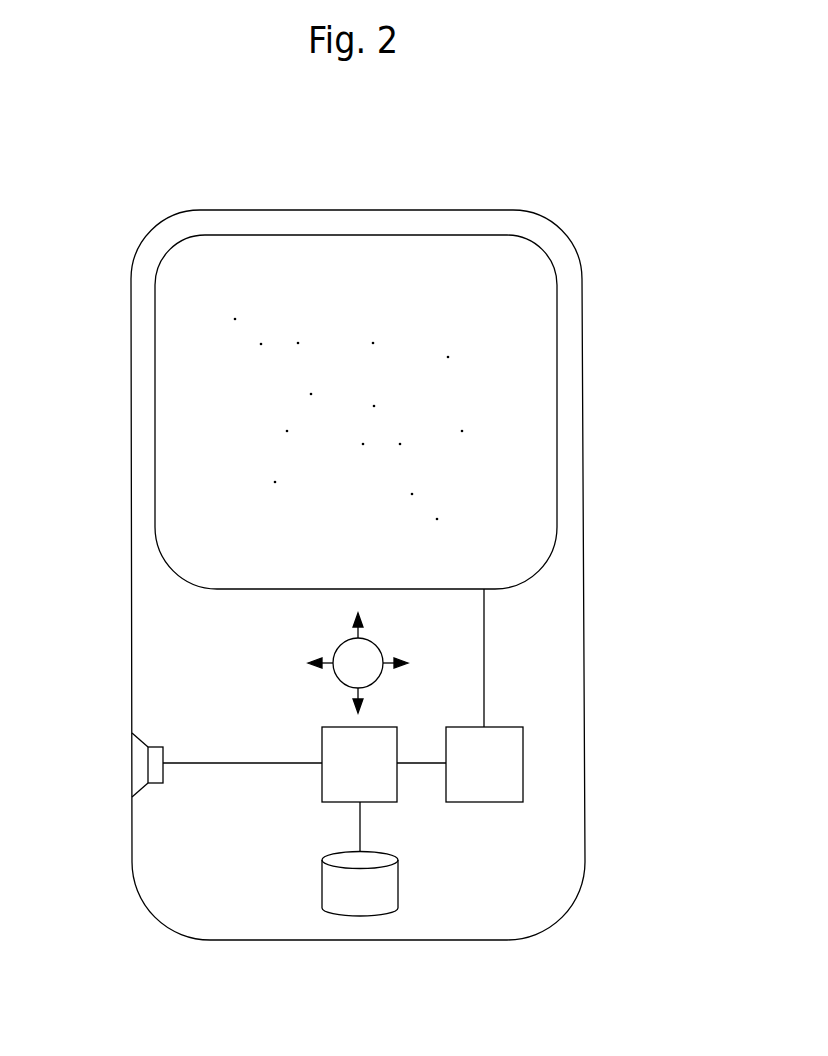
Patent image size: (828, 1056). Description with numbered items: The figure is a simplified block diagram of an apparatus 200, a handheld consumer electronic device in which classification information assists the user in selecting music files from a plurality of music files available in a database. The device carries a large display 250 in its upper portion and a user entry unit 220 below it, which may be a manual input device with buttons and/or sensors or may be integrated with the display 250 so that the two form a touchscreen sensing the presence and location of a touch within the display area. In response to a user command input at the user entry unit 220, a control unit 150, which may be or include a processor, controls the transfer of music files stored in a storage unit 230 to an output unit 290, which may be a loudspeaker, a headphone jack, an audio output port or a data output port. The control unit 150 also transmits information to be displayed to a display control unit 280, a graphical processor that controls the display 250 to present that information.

The apparatus 200 is at (360, 940).
The display 250 is at (557, 412).
The user entry unit 220 is at (341, 646).
The control unit 150 is at (322, 788).
The display control unit 280 is at (523, 763).
The storage unit 230 is at (398, 880).
The output unit 290 is at (131, 763).